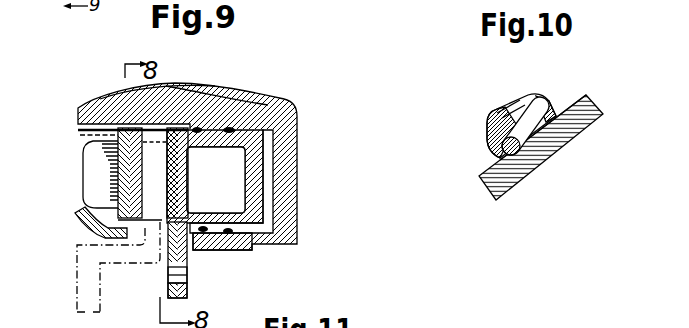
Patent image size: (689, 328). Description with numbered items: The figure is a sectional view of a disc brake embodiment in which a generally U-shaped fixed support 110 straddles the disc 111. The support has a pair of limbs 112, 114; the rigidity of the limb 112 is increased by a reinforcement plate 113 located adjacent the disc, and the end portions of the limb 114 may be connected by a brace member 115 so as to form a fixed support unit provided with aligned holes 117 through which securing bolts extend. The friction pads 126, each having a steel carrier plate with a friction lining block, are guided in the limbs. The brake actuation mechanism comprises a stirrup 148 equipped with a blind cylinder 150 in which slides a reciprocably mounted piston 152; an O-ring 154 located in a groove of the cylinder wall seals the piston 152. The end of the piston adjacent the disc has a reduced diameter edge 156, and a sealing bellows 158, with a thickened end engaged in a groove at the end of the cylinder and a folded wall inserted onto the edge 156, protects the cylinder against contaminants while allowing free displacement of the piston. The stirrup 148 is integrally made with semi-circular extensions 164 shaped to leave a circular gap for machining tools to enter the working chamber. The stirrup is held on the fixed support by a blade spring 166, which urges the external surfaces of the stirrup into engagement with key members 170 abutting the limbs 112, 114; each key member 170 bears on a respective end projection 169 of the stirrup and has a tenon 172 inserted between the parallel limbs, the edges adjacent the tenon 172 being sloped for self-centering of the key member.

In FIG. 9, the fixed support 110 is at (170, 170).
In FIG. 9, the disc 111 is at (122, 180).
In FIG. 9, the limb 112 is at (165, 274).
In FIG. 10, the limb 112 is at (533, 101).
In FIG. 9, the reinforcement plate 113 is at (152, 304).
In FIG. 10, the limb 114 is at (489, 153).
In FIG. 9, the brace member 115 is at (78, 213).
In FIG. 9, the aligned holes 117 is at (166, 270).
In FIG. 9, the friction pads 126 is at (166, 145).
In FIG. 9, the stirrup 148 is at (205, 85).
In FIG. 9, the blind cylinder 150 is at (270, 176).
In FIG. 9, the piston 152 is at (287, 115).
In FIG. 9, the O-ring 154 is at (258, 218).
In FIG. 9, the reduced diameter edge 156 is at (190, 214).
In FIG. 9, the sealing bellows 158 is at (221, 230).
In FIG. 9, the semi-circular extensions 164 is at (102, 145).
In FIG. 9, the blade spring 166 is at (186, 126).
In FIG. 10, the end projection 169 is at (528, 176).
In FIG. 10, the key member 170 is at (553, 148).
In FIG. 10, the tenon 172 is at (497, 111).